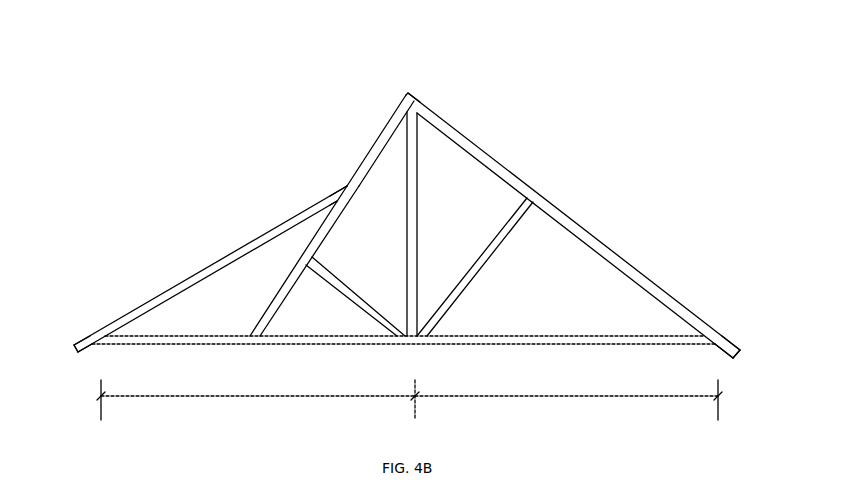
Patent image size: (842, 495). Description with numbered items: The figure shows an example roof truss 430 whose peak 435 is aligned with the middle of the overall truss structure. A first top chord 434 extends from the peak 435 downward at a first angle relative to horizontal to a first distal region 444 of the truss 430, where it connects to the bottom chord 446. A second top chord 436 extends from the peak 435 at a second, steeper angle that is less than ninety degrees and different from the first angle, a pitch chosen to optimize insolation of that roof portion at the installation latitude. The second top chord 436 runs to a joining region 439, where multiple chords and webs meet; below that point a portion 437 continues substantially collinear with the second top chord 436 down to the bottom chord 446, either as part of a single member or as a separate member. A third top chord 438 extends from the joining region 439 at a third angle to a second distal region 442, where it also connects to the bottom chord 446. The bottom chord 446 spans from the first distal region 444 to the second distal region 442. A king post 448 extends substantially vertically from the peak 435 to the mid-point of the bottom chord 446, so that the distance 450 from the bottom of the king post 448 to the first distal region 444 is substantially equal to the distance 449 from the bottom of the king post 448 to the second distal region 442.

The truss 430 is at (229, 70).
The first top chord 434 is at (484, 151).
The peak 435 is at (411, 93).
The second top chord 436 is at (382, 131).
The portion 437 is at (352, 195).
The third top chord 438 is at (187, 278).
The joining region 439 is at (333, 184).
The second distal region 442 is at (79, 322).
The first distal region 444 is at (737, 328).
The bottom chord 446 is at (638, 346).
The king post 448 is at (418, 190).
The distance 449 is at (256, 400).
The distance 450 is at (566, 400).